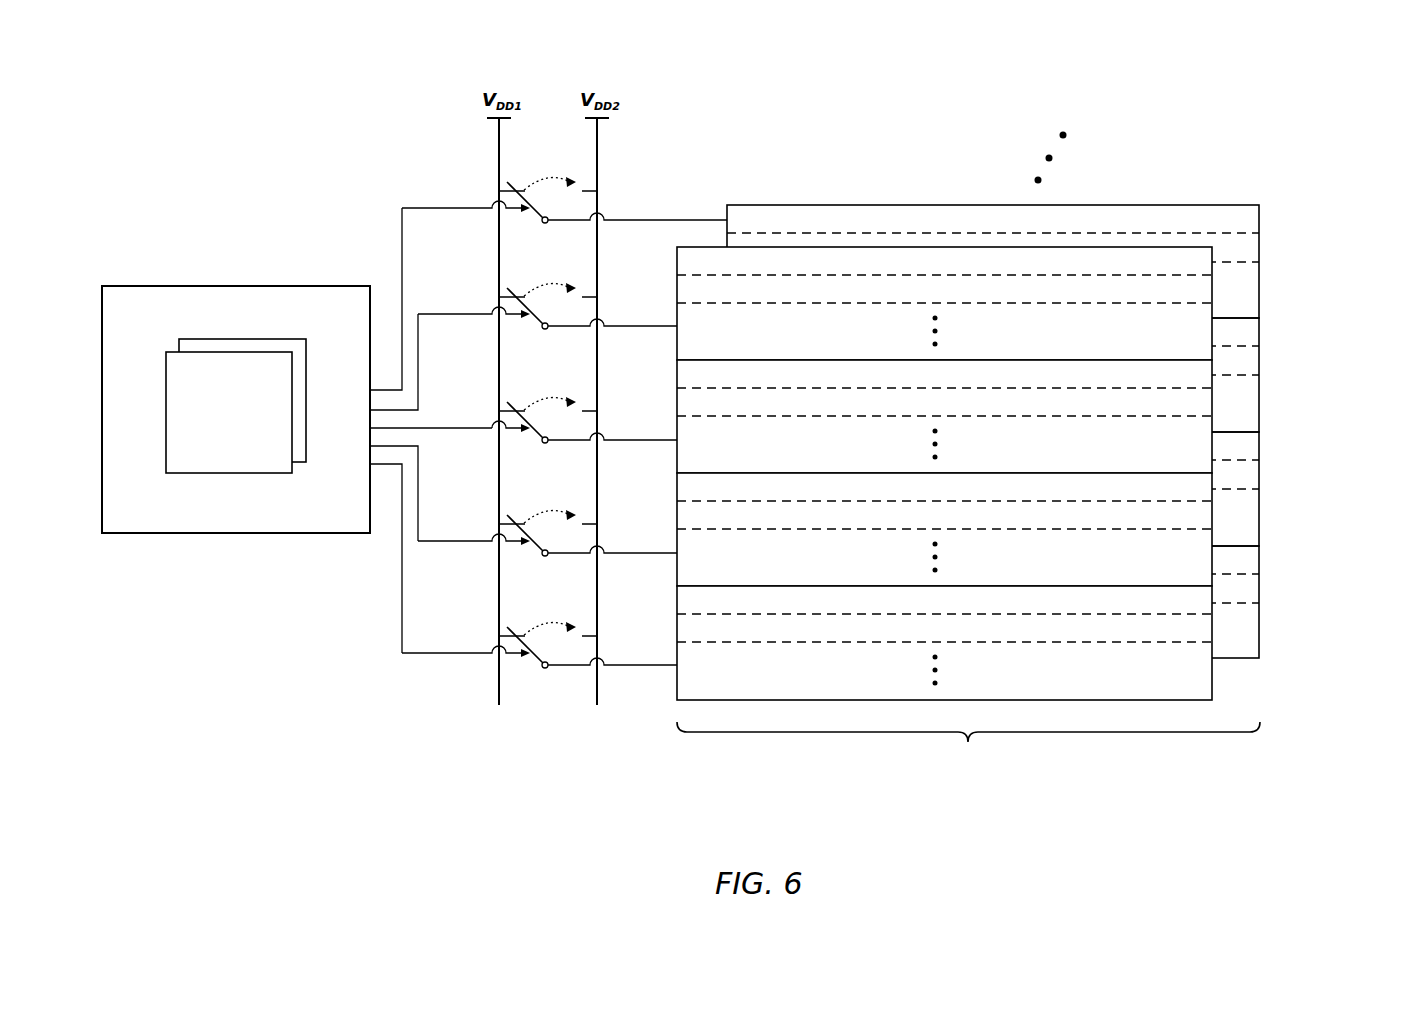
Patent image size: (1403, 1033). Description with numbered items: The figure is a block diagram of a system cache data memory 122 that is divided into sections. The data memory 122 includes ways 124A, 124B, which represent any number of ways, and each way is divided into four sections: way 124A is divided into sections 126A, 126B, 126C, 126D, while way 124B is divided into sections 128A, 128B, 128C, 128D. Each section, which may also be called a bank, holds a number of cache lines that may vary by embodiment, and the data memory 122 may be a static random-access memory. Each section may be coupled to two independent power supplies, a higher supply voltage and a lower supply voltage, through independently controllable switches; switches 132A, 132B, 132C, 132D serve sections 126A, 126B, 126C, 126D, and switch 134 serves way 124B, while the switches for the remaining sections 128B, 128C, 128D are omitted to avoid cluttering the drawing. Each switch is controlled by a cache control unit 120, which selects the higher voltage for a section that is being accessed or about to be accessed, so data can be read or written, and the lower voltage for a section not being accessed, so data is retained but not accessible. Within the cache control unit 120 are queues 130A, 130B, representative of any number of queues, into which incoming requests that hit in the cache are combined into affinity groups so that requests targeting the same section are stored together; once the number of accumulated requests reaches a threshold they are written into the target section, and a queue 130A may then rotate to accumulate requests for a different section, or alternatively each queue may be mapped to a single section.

The cache control unit 120 is at (217, 533).
The queue 130A is at (229, 412).
The queue 130B is at (223, 338).
The switch 134 is at (564, 213).
The switch 132A is at (547, 319).
The switch 132B is at (584, 433).
The switch 132C is at (547, 546).
The switch 132D is at (539, 658).
The way 124A is at (1034, 409).
The way 124B is at (1048, 385).
The section 126A is at (1212, 332).
The section 126B is at (1212, 447).
The section 126C is at (1212, 560).
The section 126D is at (1212, 673).
The section 128A is at (1260, 272).
The section 128B is at (1260, 400).
The section 128C is at (1260, 513).
The section 128D is at (1044, 602).
The data memory 122 is at (968, 747).